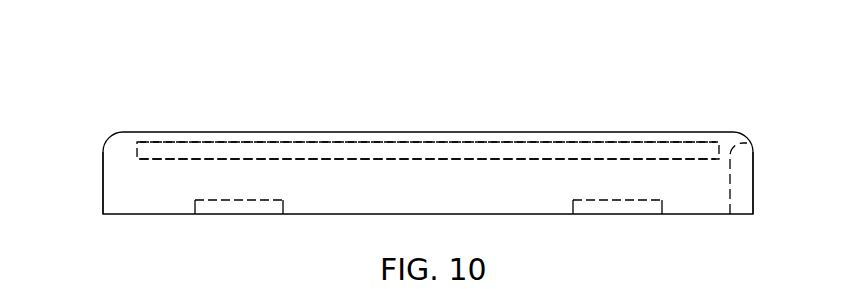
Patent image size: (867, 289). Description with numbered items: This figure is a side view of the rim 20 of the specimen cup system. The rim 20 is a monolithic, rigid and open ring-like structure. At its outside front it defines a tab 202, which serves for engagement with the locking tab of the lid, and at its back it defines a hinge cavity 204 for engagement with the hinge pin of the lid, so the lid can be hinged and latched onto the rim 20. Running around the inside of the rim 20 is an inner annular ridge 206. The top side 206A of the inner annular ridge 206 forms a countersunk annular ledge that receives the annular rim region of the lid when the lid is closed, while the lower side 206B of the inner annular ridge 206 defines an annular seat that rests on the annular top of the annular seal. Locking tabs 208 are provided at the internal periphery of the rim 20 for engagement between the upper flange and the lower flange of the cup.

The rim 20 is at (176, 80).
The tab 202 is at (94, 188).
The hinge cavity 204 is at (748, 183).
The inner annular ridge 206 is at (413, 152).
The top side of inner annular ridge 206A is at (615, 142).
The lower side of inner annular ridge 206B is at (538, 162).
The locking tabs 208 is at (227, 210).